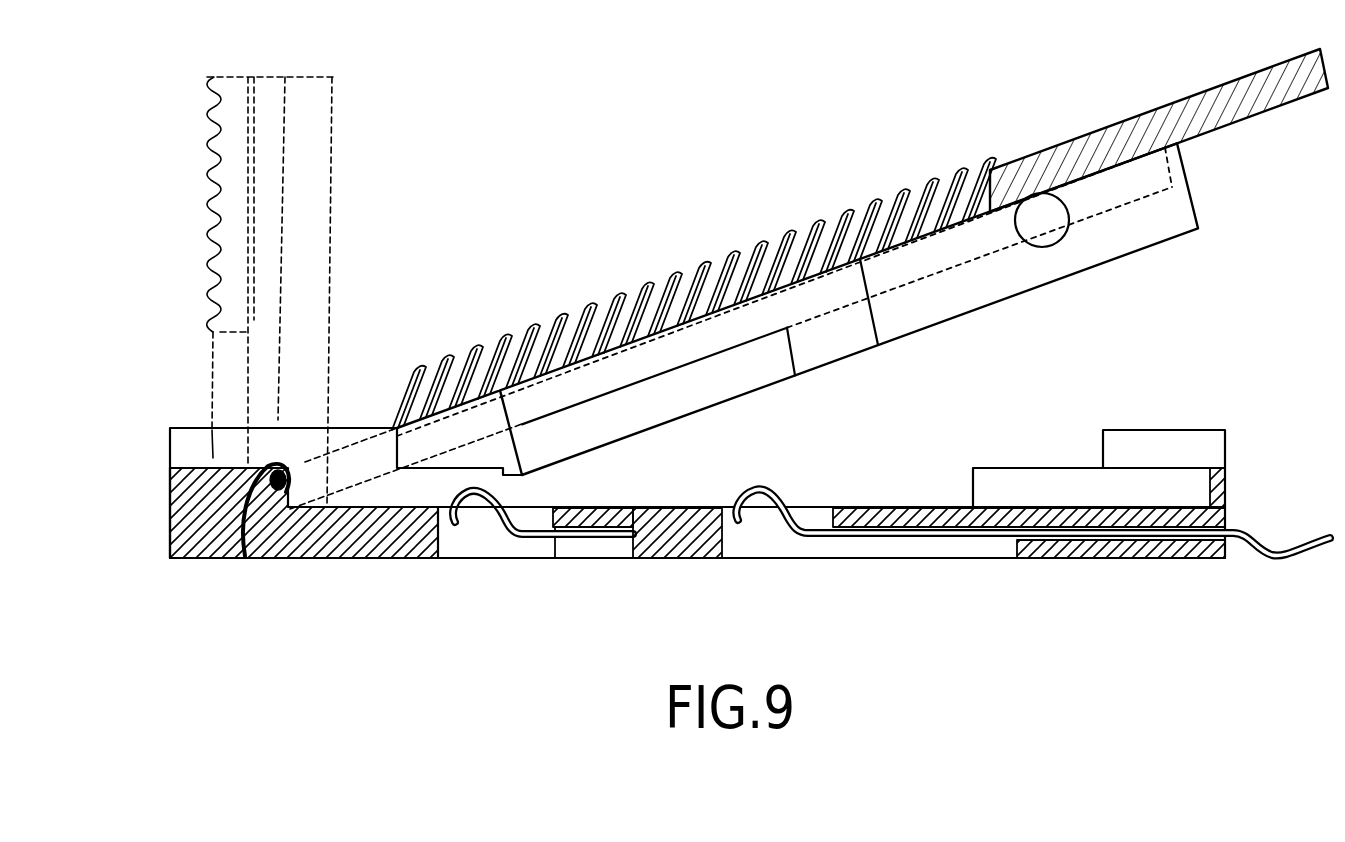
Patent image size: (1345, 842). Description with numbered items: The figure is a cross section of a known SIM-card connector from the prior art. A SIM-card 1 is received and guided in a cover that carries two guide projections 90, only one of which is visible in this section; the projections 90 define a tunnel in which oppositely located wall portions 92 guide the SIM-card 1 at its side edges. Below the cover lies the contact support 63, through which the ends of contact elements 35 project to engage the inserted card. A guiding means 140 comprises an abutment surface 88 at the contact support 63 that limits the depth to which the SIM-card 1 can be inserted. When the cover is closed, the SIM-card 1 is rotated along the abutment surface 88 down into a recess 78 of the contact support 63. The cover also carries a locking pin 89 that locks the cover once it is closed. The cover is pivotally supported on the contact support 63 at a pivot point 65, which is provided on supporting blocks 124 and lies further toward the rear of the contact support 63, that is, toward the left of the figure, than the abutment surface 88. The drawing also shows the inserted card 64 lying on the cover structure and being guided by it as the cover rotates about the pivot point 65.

The SIM-card 1 is at (1140, 203).
The contact elements 35 is at (556, 562).
The contact support 63 is at (922, 503).
The card 64 is at (1275, 90).
The pivot point 65 is at (245, 558).
The recess 78 is at (1210, 487).
The abutment surface 88 is at (303, 462).
The locking pin 89 is at (1048, 247).
The guide projections 90 is at (770, 384).
The wall portions 92 is at (853, 348).
The supporting blocks 124 is at (185, 447).
The guiding means 140 is at (410, 562).